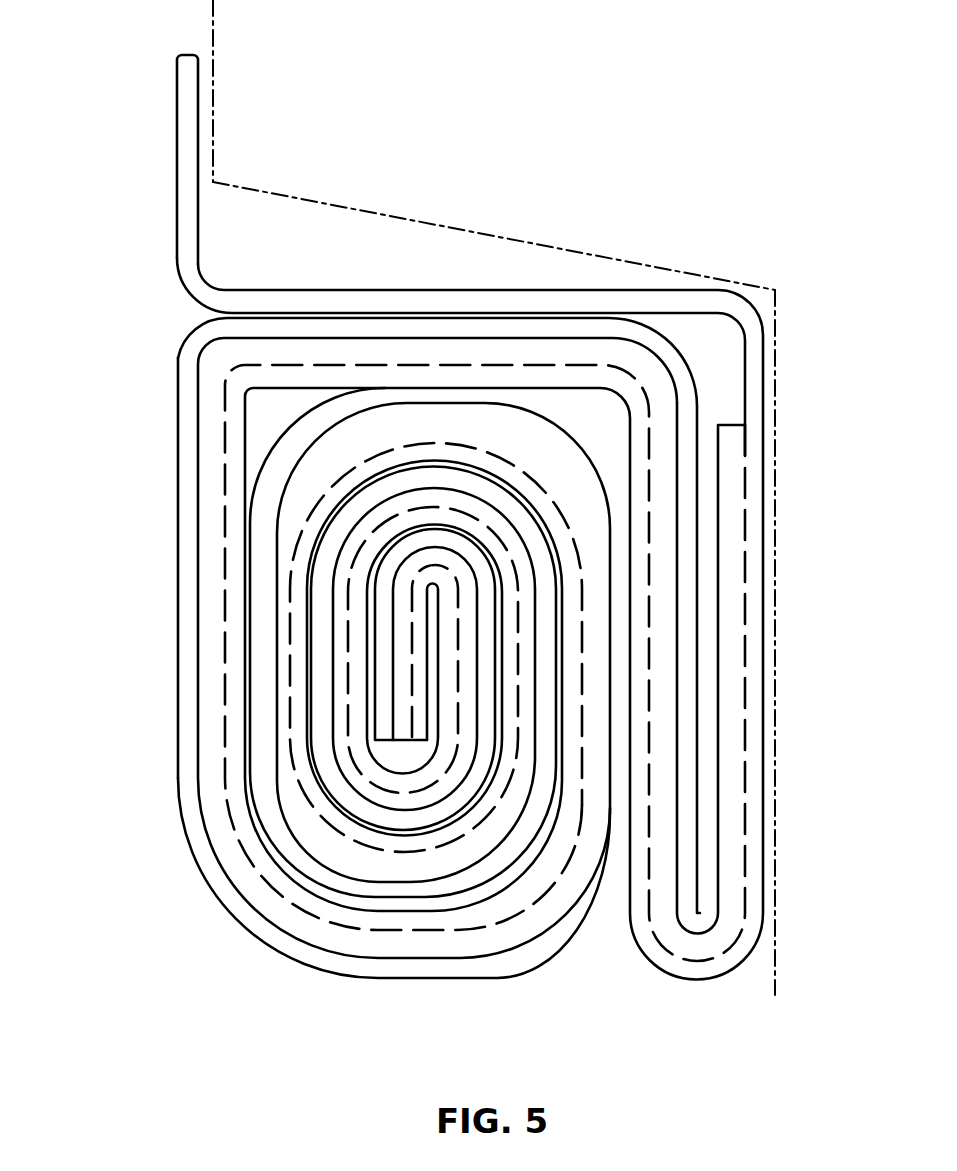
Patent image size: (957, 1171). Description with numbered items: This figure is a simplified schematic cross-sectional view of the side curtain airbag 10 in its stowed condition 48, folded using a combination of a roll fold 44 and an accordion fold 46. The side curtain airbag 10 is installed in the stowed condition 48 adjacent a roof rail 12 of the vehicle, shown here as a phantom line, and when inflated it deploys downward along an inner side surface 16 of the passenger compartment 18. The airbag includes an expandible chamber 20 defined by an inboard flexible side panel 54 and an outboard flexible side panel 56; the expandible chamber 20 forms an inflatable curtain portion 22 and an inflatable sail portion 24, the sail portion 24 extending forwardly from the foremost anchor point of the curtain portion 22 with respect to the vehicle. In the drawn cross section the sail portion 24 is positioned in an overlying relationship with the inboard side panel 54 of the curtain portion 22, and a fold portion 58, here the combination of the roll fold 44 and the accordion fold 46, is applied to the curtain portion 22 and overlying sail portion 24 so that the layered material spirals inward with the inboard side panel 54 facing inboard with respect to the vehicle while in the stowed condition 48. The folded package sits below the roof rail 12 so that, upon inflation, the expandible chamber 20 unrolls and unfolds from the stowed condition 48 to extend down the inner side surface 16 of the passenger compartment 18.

The side curtain airbag 10 is at (505, 190).
The roof rail 12 is at (566, 246).
The inner side surface 16 is at (770, 988).
The passenger compartment 18 is at (150, 958).
The expandible chamber 20 is at (148, 843).
The inflatable curtain portion 22 is at (238, 745).
The inflatable sail portion 24 is at (690, 440).
The roll fold 44 is at (330, 988).
The accordion fold 46 is at (644, 962).
The stowed condition 48 is at (128, 292).
The inboard flexible side panel 54 is at (180, 562).
The outboard flexible side panel 56 is at (255, 460).
The fold portion 58 is at (118, 346).